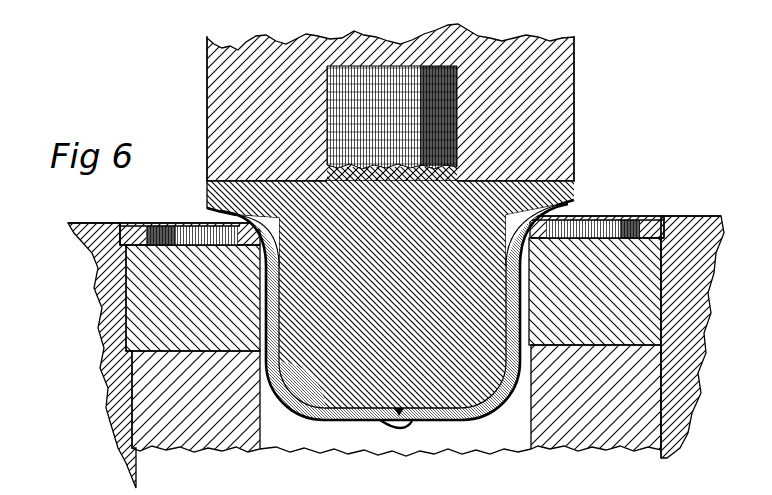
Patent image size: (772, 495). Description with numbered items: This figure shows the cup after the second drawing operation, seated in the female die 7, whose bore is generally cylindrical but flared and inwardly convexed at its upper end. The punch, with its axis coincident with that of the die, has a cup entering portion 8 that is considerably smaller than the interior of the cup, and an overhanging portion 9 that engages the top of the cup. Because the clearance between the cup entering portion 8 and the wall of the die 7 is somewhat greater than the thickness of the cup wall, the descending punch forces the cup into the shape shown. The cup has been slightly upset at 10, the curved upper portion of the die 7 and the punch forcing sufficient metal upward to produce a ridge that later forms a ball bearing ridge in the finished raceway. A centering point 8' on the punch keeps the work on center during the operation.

The female die 7 is at (539, 268).
The cup entering portion 8 is at (375, 446).
The centering point 8' is at (408, 451).
The overhanging portion 9 is at (567, 179).
The upset portion 10 is at (535, 233).